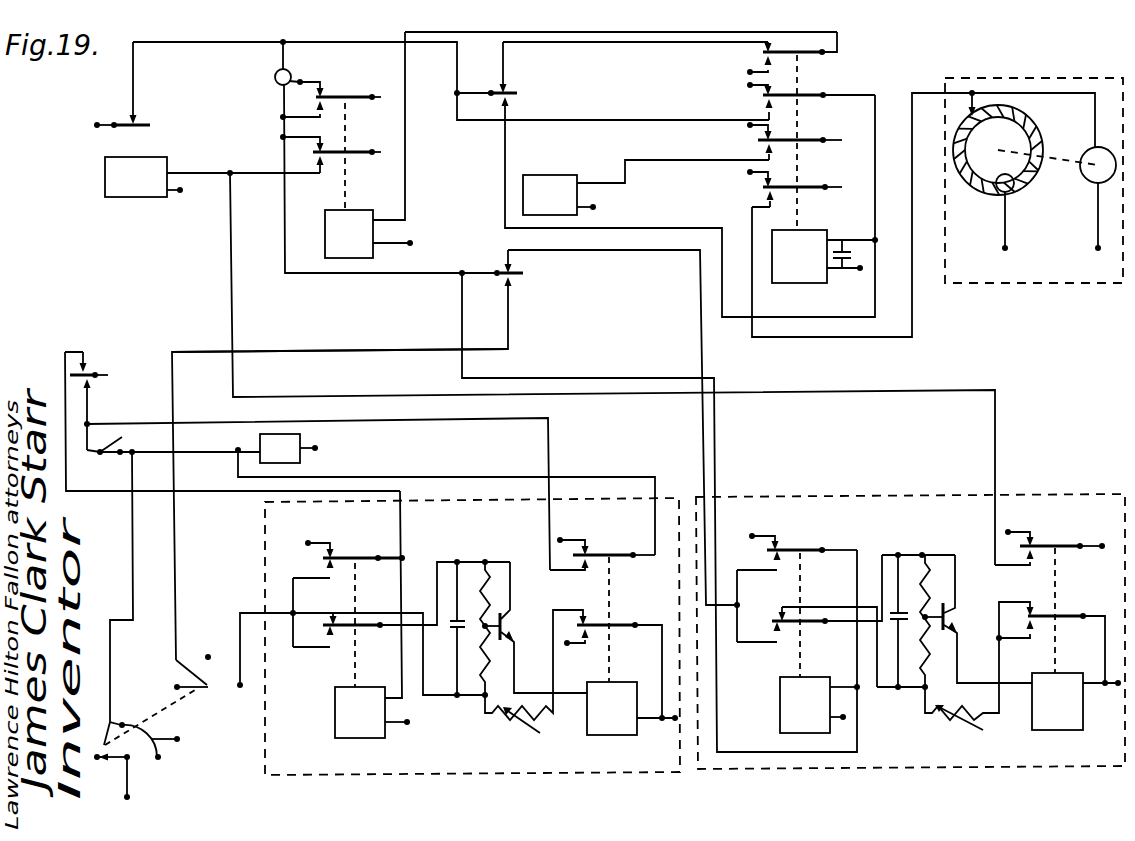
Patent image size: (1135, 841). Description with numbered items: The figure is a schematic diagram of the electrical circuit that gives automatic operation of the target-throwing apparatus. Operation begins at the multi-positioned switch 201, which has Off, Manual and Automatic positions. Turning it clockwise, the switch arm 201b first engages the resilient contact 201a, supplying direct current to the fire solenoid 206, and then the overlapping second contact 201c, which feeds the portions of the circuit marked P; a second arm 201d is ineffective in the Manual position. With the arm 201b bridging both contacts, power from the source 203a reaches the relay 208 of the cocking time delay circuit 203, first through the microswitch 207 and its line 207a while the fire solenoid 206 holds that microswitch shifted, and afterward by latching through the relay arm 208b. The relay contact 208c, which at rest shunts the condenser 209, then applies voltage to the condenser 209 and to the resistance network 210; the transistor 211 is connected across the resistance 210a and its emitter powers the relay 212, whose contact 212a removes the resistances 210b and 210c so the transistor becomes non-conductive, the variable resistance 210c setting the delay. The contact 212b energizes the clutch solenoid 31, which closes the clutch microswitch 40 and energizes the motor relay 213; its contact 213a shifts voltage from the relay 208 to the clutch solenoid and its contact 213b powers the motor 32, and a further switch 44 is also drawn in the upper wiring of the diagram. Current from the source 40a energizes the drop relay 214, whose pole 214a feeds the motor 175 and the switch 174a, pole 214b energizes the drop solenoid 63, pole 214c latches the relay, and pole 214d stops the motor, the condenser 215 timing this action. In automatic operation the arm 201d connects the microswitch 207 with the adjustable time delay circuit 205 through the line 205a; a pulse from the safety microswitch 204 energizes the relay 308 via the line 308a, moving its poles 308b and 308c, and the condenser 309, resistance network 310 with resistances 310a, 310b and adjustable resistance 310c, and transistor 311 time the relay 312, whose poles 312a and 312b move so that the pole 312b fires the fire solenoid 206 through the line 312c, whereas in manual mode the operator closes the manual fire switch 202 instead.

The clutch solenoid 31 is at (168, 160).
The motor 32 is at (275, 74).
The clutch microswitch 40 is at (140, 122).
The source 40a is at (100, 121).
The switch 44 is at (517, 94).
The drop solenoid 63 is at (535, 178).
The switch of the reduction mechanism 174a is at (1037, 152).
The motor 175 is at (1092, 172).
The multi-positioned switch 201 is at (130, 762).
The resilient contact 201a is at (104, 742).
The switch arm 201b is at (128, 778).
The second contact 201c is at (160, 722).
The second arm 201d is at (192, 685).
The manual fire switch 202 is at (117, 438).
The time delay circuit 203 is at (836, 495).
The source 203a is at (348, 185).
The safety microswitch 204 is at (90, 360).
The time delay circuit 205 is at (267, 780).
The line 205a is at (365, 352).
The fire solenoid 206 is at (305, 453).
The microswitch 207 is at (525, 280).
The line 207a is at (500, 268).
The relay 208 is at (790, 695).
The relay arm 208b is at (793, 549).
The relay contact 208c is at (795, 617).
The condenser 209 is at (902, 607).
The resistance network 210 is at (928, 553).
The resistance 210a is at (927, 592).
The resistance 210b is at (912, 687).
The resistance 210c is at (942, 720).
The transistor 211 is at (950, 620).
The relay 212 is at (1062, 707).
The contact 212a is at (1068, 615).
The contact 212b is at (1048, 545).
The motor relay 213 is at (345, 232).
The contact 213a is at (350, 150).
The contact 213b is at (334, 96).
The drop relay 214 is at (808, 275).
The pole 214a is at (810, 184).
The pole 214b is at (810, 137).
The pole 214c is at (828, 92).
The pole 214d is at (835, 48).
The condenser 215 is at (848, 248).
The relay 308 is at (367, 718).
The line 308a is at (404, 512).
The pole 308b is at (345, 556).
The pole 308c is at (352, 628).
The condenser 309 is at (450, 618).
The resistance network 310 is at (490, 560).
The resistance 310a is at (510, 566).
The resistance 310b is at (478, 687).
The adjustable resistance 310c is at (503, 727).
The transistor 311 is at (510, 627).
The relay 312 is at (617, 720).
The pole 312a is at (617, 622).
The pole 312b is at (597, 553).
The line 312c is at (578, 475).